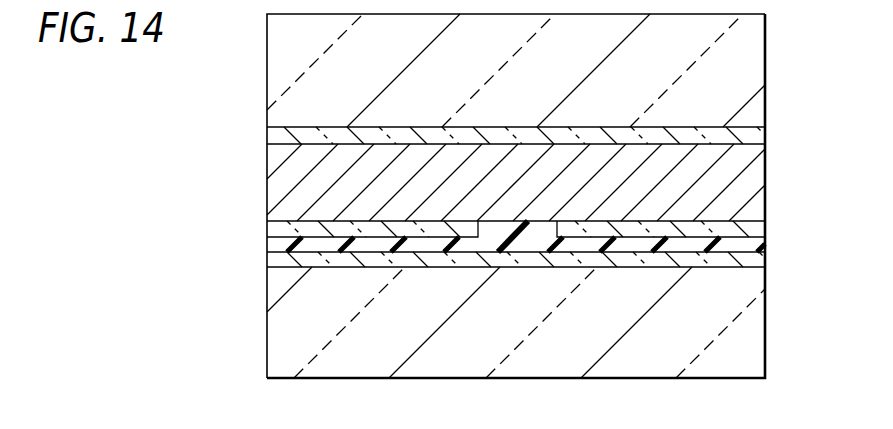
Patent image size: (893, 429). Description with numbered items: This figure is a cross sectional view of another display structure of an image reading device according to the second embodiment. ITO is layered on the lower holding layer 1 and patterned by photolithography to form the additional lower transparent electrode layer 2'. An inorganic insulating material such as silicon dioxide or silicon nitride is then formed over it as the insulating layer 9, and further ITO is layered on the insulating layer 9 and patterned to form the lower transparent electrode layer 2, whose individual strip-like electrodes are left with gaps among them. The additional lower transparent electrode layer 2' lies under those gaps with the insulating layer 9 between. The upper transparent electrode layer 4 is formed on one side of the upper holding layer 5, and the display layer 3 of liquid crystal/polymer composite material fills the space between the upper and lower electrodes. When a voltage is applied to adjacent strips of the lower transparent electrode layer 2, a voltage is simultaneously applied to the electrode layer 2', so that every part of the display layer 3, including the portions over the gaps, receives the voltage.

The lower holding layer 1 is at (753, 332).
The lower transparent electrode layer 2 is at (544, 228).
The additional lower transparent electrode layer 2' is at (489, 256).
The display layer 3 is at (753, 175).
The upper transparent electrode layer 4 is at (753, 132).
The upper holding layer 5 is at (753, 70).
The insulating layer 9 is at (755, 246).